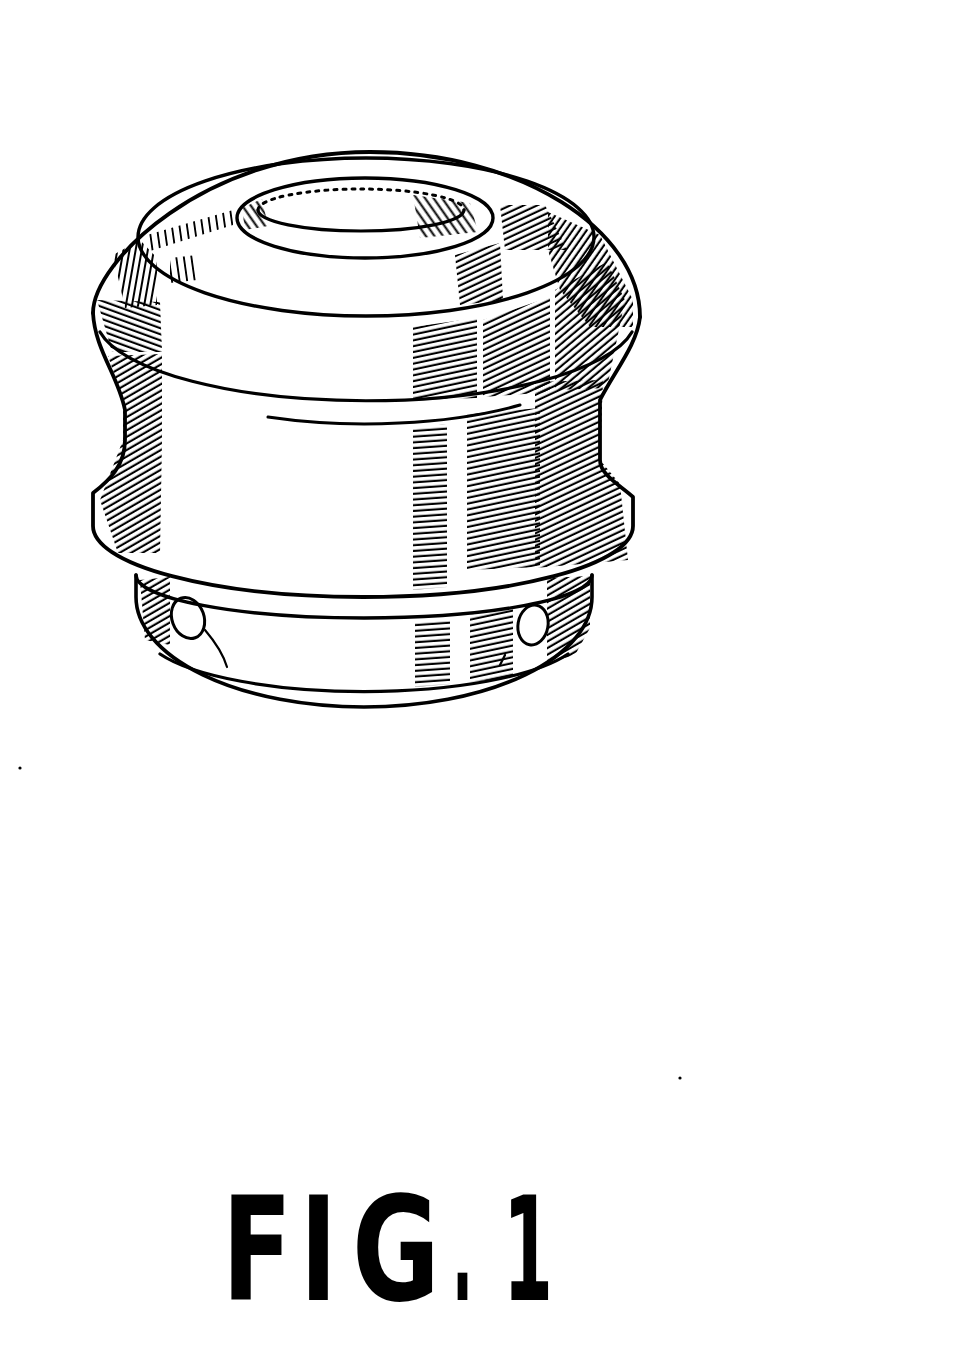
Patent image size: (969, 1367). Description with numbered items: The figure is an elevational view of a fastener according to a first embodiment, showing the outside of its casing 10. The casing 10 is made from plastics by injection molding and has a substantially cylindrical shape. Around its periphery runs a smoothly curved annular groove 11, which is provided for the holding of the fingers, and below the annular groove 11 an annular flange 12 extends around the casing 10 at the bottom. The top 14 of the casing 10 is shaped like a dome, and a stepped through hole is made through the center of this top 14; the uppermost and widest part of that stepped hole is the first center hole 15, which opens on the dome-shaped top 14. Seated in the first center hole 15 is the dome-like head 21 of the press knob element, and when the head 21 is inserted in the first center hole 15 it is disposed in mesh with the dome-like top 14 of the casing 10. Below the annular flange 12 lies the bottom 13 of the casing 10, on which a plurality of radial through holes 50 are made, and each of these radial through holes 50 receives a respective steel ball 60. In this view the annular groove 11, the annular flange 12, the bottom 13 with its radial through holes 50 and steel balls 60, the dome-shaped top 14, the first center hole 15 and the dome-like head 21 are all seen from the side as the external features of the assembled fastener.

The casing 10 is at (660, 273).
The annular groove 11 is at (600, 435).
The annular flange 12 is at (550, 580).
The bottom 13 is at (310, 664).
The top 14 is at (530, 222).
The first center hole 15 is at (237, 226).
The dome-like head 21 is at (367, 205).
The radial through holes 50 is at (227, 667).
The steel ball 60 is at (167, 650).